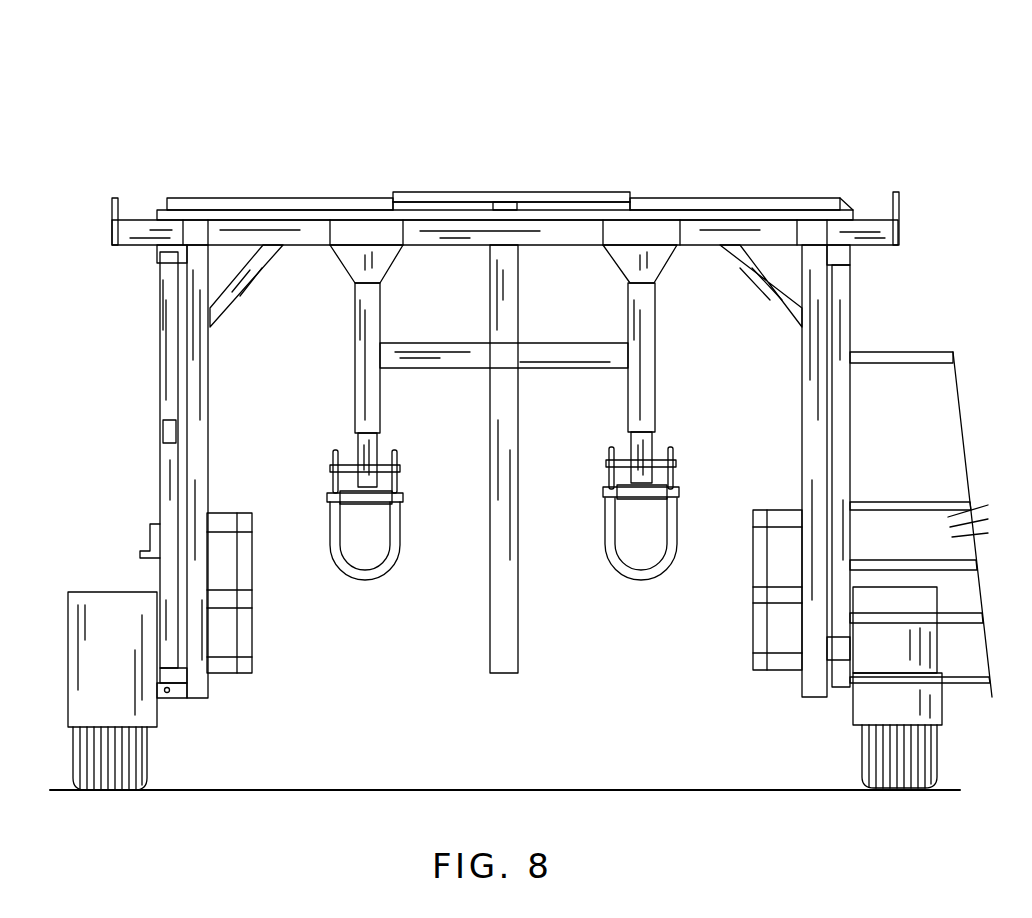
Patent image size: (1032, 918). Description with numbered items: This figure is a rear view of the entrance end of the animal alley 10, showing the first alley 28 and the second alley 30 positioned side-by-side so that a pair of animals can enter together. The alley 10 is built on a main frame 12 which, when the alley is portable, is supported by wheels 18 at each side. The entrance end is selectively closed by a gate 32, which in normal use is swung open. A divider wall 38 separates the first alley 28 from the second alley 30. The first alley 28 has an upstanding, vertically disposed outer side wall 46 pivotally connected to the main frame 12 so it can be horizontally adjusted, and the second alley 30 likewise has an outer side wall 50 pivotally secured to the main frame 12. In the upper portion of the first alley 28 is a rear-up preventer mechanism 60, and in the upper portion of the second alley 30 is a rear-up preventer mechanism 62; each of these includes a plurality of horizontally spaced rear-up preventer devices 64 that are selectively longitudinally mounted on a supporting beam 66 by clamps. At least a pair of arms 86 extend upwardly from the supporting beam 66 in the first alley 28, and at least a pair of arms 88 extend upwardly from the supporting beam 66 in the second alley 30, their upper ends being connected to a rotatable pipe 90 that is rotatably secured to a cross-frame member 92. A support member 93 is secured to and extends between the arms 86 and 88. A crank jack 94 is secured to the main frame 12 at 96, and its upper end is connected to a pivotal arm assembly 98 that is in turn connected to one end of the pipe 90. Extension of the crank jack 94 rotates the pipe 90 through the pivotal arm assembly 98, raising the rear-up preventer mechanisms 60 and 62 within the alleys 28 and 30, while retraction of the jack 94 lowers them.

The animal alley 10 is at (583, 156).
The main frame 12 is at (140, 382).
The wheels 18 is at (130, 752).
The first alley 28 is at (293, 345).
The second alley 30 is at (744, 351).
The gate 32 is at (885, 352).
The divider wall 38 is at (503, 602).
The outer side wall 46 is at (240, 572).
The outer side wall 50 is at (753, 632).
The rear-up preventer mechanism 60 is at (302, 464).
The rear-up preventer mechanism 62 is at (690, 408).
The rear-up preventer devices 64 is at (380, 540).
The supporting beam 66 is at (375, 458).
The arms 86 is at (360, 342).
The arms 88 is at (652, 392).
The rotatable pipe 90 is at (460, 232).
The cross-frame member 92 is at (142, 228).
The support member 93 is at (540, 356).
The crank jack 94 is at (172, 495).
The jack securement point 96 is at (172, 693).
The pivotal arm assembly 98 is at (163, 320).